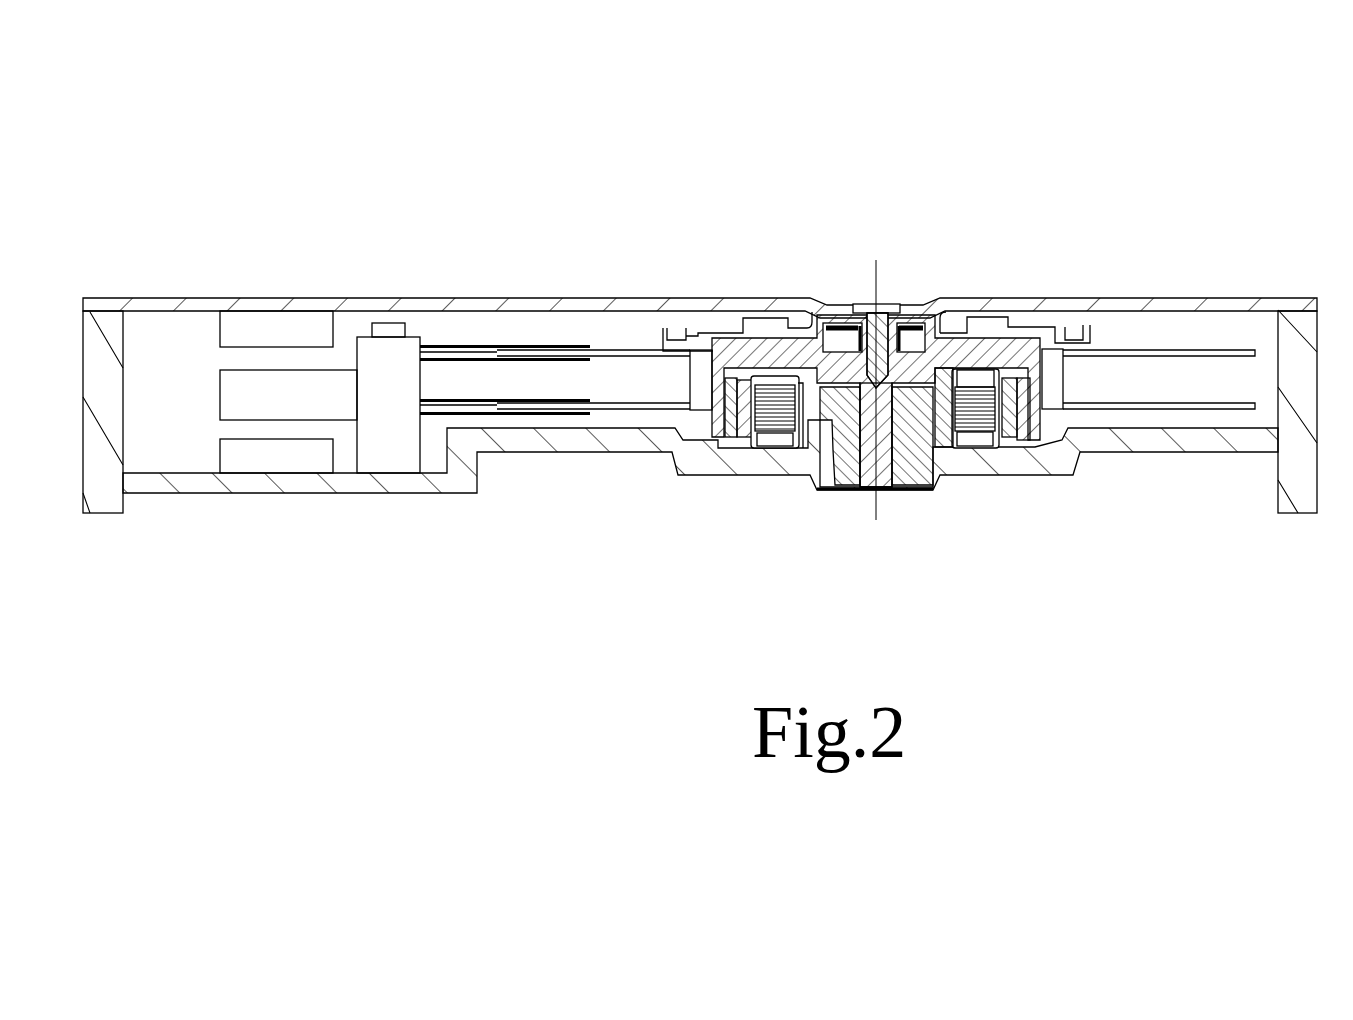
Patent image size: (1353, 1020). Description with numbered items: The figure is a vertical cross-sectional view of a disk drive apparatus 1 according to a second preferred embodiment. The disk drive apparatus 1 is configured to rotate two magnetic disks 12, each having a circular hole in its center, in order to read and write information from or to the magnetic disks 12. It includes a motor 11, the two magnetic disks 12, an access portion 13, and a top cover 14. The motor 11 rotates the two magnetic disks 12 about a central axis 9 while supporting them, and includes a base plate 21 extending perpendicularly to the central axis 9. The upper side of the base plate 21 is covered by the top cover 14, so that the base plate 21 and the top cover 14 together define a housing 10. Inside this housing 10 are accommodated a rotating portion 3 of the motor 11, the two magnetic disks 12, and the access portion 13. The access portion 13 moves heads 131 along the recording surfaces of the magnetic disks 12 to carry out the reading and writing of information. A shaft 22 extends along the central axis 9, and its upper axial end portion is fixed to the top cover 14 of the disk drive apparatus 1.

The disk drive apparatus 1 is at (306, 205).
The housing 10 is at (184, 275).
The motor 11 is at (776, 500).
The magnetic disks 12 is at (1147, 402).
The access portion 13 is at (464, 326).
The heads 131 is at (590, 358).
The top cover 14 is at (1248, 305).
The rotating portion 3 is at (727, 314).
The central axis 9 is at (876, 277).
The base plate 21 is at (1010, 462).
The shaft 22 is at (880, 478).